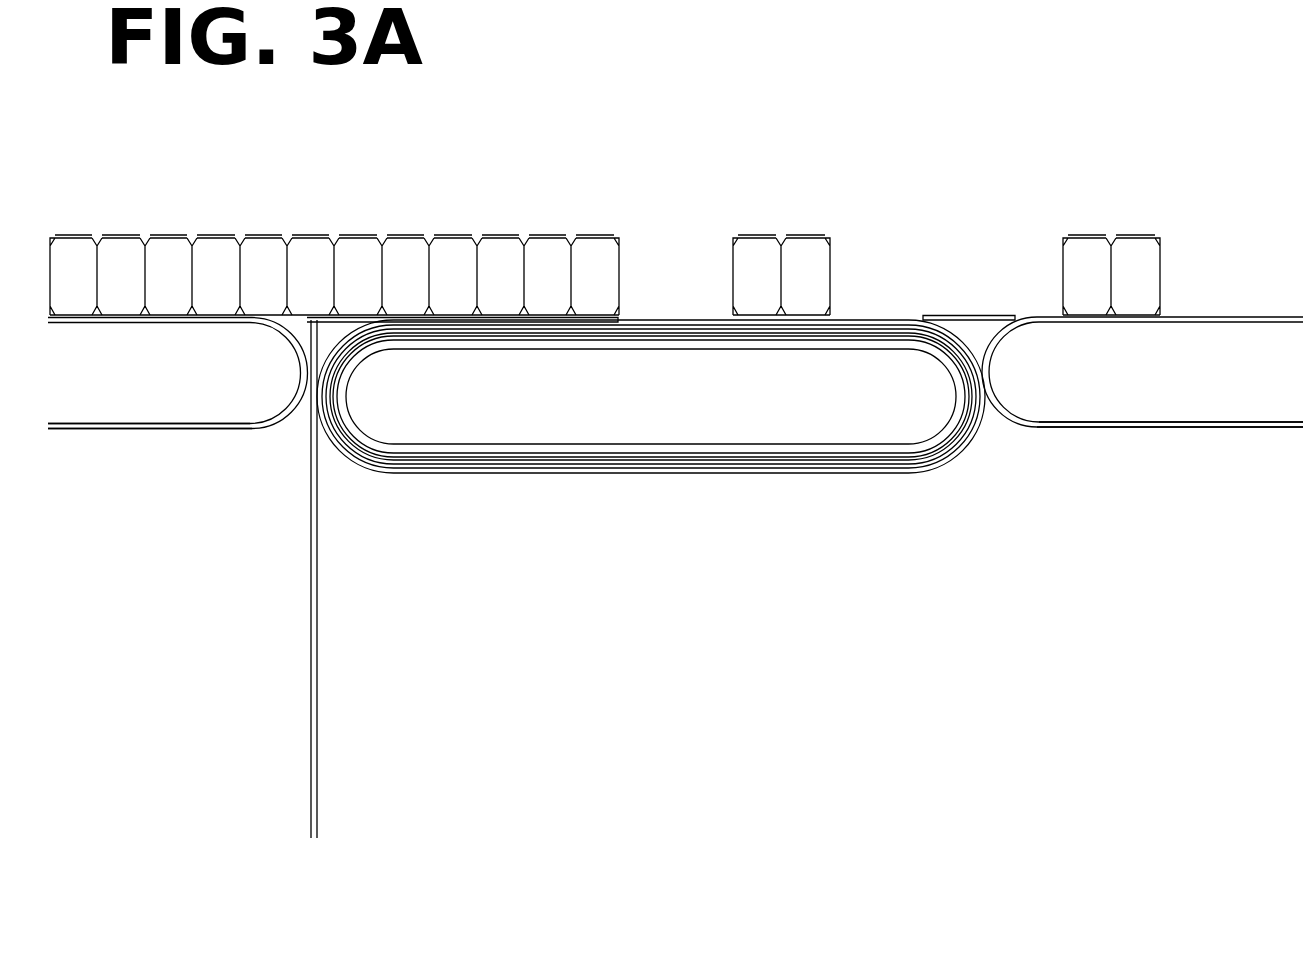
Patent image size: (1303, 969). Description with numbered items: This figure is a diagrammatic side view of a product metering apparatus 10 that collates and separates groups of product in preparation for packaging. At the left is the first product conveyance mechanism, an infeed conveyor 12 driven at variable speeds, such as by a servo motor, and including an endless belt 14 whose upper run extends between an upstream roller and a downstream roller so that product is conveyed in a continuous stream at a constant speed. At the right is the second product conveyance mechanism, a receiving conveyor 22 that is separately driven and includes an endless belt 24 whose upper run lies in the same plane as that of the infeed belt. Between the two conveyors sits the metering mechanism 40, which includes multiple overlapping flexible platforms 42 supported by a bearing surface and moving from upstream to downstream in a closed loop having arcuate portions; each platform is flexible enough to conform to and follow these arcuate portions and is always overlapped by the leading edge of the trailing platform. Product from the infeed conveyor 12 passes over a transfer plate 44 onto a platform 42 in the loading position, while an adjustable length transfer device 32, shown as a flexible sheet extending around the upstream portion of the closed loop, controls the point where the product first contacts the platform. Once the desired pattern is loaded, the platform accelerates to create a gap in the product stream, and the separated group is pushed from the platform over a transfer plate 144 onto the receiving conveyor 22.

The apparatus 10 is at (779, 156).
The infeed conveyor 12 is at (183, 430).
The endless belt 14 is at (93, 429).
The receiving conveyor 22 is at (1091, 432).
The endless belt 24 is at (1187, 427).
The adjustable length transfer device 32 is at (320, 612).
The metering mechanism 40 is at (651, 447).
The flexible platform 42 is at (498, 325).
The transfer plate 44 is at (316, 320).
The transfer plate 144 is at (968, 316).